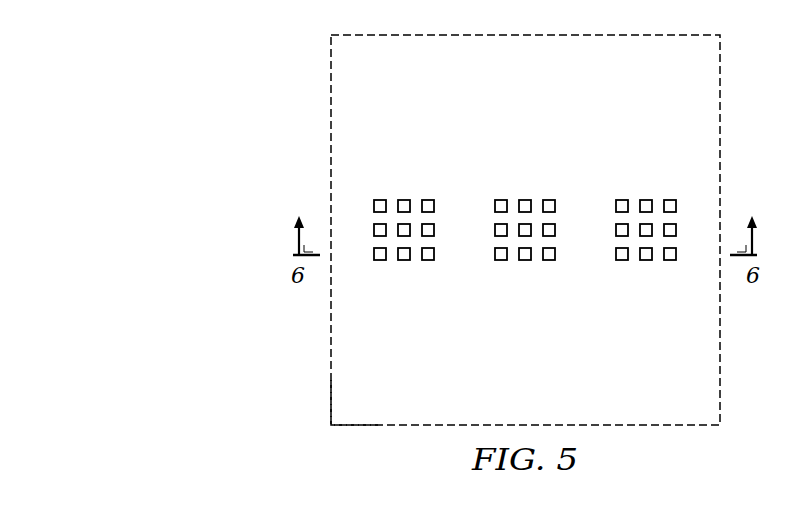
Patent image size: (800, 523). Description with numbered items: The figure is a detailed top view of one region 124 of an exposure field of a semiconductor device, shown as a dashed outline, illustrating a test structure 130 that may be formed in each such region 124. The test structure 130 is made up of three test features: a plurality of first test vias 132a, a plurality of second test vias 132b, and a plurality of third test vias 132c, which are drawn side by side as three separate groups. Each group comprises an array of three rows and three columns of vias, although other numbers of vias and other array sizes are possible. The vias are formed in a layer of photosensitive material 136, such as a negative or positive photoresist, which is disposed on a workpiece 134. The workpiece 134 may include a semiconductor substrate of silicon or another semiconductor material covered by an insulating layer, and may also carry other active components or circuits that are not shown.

The region 124 is at (726, 137).
The test structure 130 is at (517, 241).
The plurality of first test vias 132a is at (389, 187).
The plurality of second test vias 132b is at (536, 174).
The plurality of third test vias 132c is at (652, 174).
The workpiece 134 is at (379, 204).
The layer of photosensitive material 136 is at (345, 387).